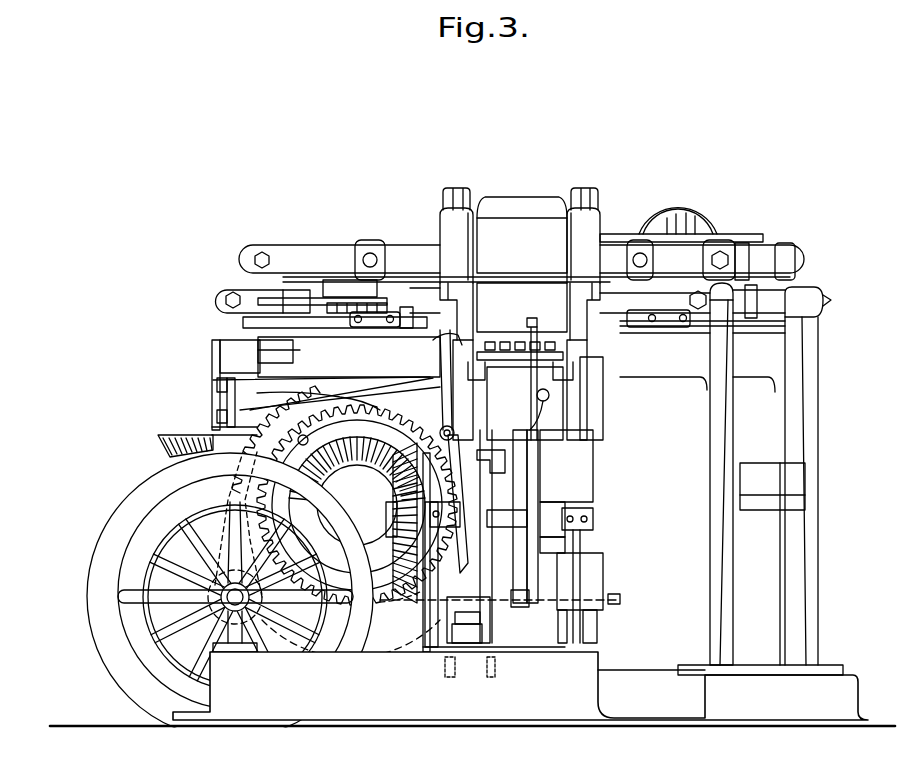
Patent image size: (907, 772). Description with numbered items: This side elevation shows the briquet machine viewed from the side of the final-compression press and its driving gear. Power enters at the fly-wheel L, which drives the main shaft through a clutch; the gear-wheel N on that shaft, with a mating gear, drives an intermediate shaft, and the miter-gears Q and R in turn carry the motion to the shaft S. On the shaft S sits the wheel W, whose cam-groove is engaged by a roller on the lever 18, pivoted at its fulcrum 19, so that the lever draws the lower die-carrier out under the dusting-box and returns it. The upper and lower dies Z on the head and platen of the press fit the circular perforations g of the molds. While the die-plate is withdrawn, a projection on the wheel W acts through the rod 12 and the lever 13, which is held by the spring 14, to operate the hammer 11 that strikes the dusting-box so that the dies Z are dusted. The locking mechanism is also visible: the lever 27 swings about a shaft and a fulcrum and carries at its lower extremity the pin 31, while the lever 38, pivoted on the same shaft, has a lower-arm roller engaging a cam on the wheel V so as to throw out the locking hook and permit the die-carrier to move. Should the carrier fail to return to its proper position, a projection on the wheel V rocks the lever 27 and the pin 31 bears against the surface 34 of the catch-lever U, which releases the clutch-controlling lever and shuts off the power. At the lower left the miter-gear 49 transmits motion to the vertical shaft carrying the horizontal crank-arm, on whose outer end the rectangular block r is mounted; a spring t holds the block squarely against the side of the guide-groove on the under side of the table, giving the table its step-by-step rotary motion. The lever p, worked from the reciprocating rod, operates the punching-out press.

The lever p is at (326, 260).
The rectangular block r is at (287, 335).
The spring t is at (283, 357).
The perforation g is at (242, 348).
The lever 27 is at (453, 355).
The lever 38 is at (433, 347).
The miter-gear 49 is at (165, 450).
The miter-gear Q is at (373, 463).
The fly-wheel L is at (254, 595).
The gear-wheel N is at (235, 577).
The miter-gear R is at (326, 513).
The dies Z is at (557, 347).
The hammer 11 is at (528, 355).
The rod 12 is at (537, 367).
The lever 13 is at (540, 400).
The spring 14 is at (521, 430).
The wheel V is at (463, 563).
The lever 18 is at (521, 465).
The wheel W is at (535, 488).
The fulcrum 19 is at (523, 600).
The shaft S is at (598, 520).
The catch-lever U is at (455, 598).
The surface 34 is at (447, 680).
The pin 31 is at (490, 677).